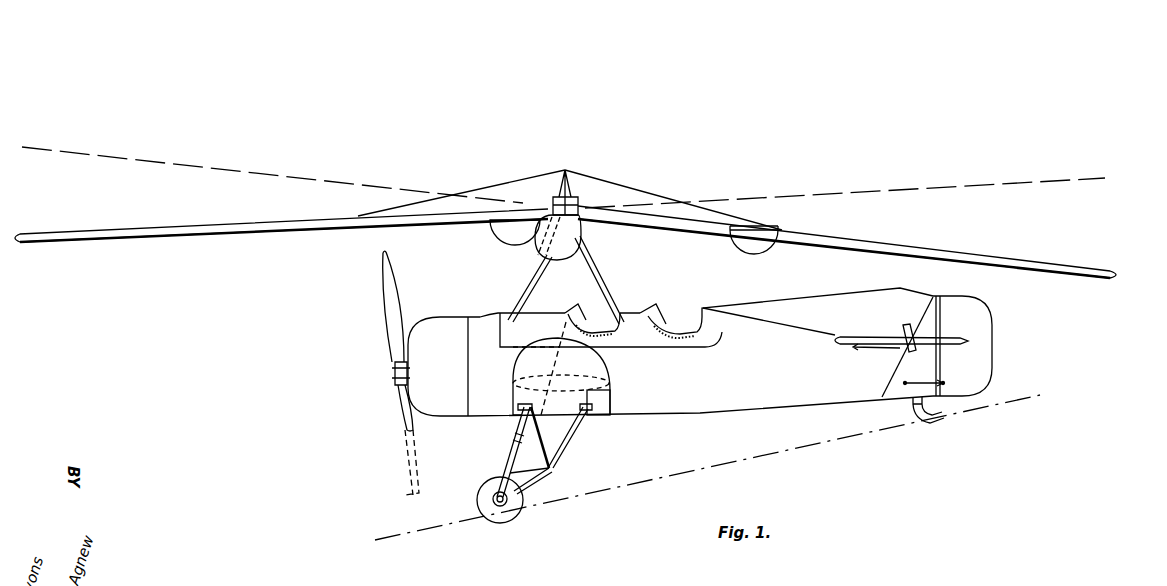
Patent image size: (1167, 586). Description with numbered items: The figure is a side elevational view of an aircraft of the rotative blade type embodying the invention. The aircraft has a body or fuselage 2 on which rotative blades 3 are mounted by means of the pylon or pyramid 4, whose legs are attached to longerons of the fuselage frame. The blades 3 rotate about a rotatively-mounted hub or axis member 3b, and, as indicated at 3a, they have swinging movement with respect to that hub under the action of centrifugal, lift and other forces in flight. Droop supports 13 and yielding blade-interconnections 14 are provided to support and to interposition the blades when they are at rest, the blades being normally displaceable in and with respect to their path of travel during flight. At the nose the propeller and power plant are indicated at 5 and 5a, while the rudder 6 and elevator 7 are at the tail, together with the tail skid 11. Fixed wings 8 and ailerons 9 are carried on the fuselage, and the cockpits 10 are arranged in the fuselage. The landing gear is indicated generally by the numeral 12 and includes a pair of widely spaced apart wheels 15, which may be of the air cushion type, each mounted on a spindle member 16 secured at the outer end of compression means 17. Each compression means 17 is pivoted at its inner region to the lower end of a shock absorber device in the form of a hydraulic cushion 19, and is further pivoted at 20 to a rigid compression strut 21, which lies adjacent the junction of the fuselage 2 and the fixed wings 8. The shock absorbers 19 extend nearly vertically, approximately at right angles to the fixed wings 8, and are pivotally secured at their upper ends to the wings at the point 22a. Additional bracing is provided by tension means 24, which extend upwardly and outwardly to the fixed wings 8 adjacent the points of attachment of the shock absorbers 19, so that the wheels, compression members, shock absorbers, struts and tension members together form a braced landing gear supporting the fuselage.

The body or fuselage 2 is at (700, 352).
The rotative blades 3 is at (178, 228).
The swinging movement of the blades 3a is at (84, 156).
The rotatively-mounted hub or axis member 3b is at (574, 186).
The pylon or pyramid 4 is at (586, 276).
The propeller 5 is at (383, 289).
The power plant 5a is at (430, 320).
The rudder 6 is at (937, 346).
The elevator 7 is at (962, 344).
The fixed wings 8 is at (513, 388).
The ailerons 9 is at (612, 401).
The cockpits 10 is at (660, 305).
The tail skid 11 is at (918, 416).
The landing gear 12 is at (558, 439).
The droop supports 13 is at (518, 179).
The yielding blade-interconnections 14 is at (628, 230).
The wheels 15 is at (480, 500).
The spindle member 16 is at (496, 506).
The compression means 17 is at (530, 489).
The hydraulic cushion shock absorber 19 is at (512, 455).
The pivot 20 is at (556, 470).
The rigid compression struts 21 is at (566, 432).
The pivot point 22a is at (520, 410).
The tension means 24 is at (584, 420).